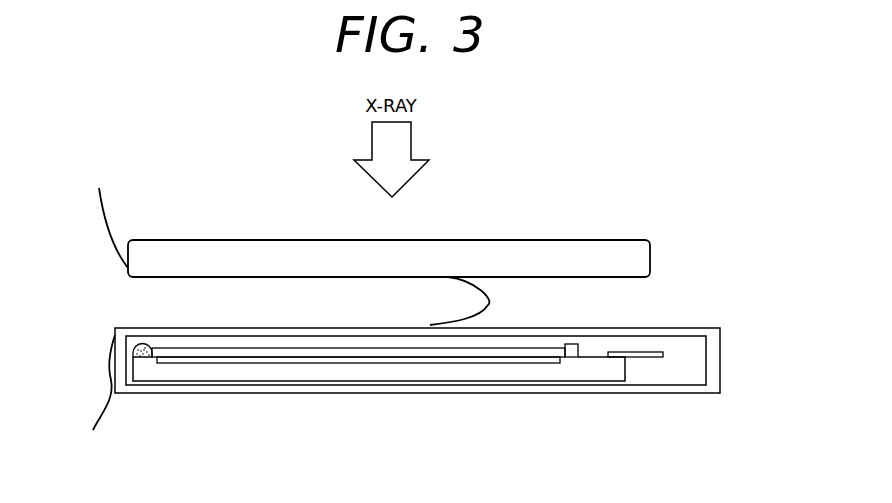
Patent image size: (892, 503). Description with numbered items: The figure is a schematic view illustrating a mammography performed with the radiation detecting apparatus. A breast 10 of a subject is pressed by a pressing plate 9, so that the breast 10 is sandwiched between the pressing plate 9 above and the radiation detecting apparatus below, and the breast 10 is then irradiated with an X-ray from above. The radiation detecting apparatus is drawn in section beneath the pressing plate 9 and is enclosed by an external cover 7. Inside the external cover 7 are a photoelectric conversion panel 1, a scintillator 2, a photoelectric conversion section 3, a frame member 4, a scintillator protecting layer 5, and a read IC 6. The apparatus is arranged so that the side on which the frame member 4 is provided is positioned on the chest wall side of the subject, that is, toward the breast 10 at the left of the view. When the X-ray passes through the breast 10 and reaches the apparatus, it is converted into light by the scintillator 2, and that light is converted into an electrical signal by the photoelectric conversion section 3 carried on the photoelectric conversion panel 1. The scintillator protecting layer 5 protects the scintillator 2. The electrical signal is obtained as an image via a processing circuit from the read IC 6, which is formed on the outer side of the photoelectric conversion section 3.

The photoelectric conversion panel 1 is at (540, 375).
The scintillator 2 is at (518, 349).
The photoelectric conversion section 3 is at (362, 363).
The frame member 4 is at (137, 357).
The scintillator protecting layer 5 is at (570, 345).
The read IC 6 is at (640, 352).
The external cover 7 is at (653, 388).
The pressing plate 9 is at (565, 248).
The breast 10 is at (106, 215).